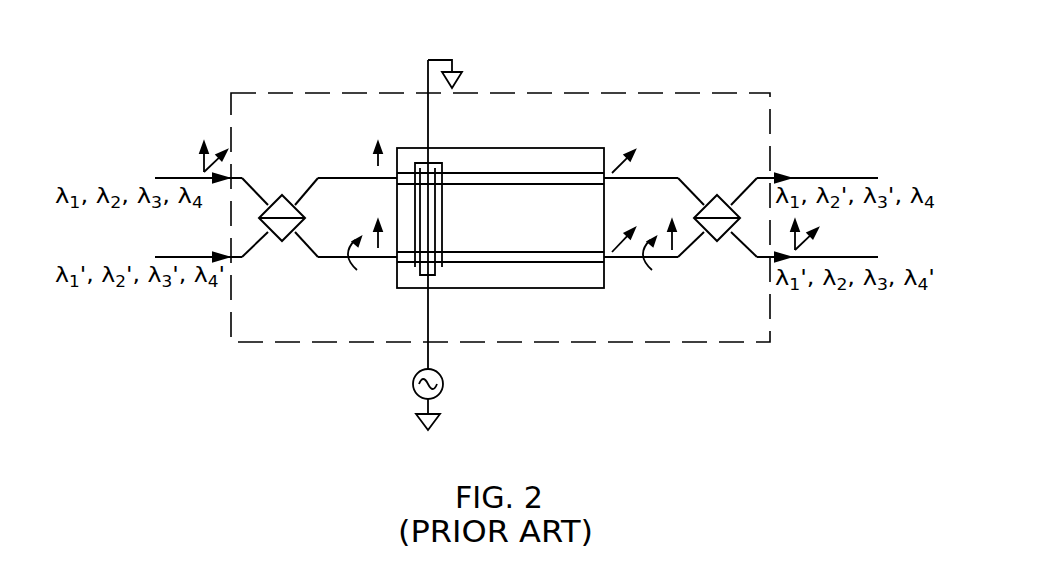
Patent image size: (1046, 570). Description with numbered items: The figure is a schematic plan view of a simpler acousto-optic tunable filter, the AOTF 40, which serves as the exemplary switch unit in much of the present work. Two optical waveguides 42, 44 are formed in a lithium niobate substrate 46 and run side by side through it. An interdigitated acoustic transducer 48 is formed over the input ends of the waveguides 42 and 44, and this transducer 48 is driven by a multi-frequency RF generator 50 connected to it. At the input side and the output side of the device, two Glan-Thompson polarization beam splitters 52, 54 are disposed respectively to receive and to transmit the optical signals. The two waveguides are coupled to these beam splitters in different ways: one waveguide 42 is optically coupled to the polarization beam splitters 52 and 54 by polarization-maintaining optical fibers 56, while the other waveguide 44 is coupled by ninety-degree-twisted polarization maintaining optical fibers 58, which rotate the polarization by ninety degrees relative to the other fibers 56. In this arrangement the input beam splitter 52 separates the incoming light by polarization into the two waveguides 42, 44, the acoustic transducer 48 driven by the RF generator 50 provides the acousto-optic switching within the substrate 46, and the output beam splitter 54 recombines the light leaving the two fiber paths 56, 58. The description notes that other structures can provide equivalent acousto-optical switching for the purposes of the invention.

The AOTF 40 is at (500, 189).
The optical waveguide 42 is at (493, 184).
The optical waveguide 44 is at (493, 252).
The lithium niobate substrate 46 is at (503, 196).
The interdigitated acoustic transducer 48 is at (413, 155).
The multi-frequency RF generator 50 is at (435, 391).
The polarization beam splitter 52 is at (280, 189).
The polarization beam splitter 54 is at (717, 190).
The polarization-maintaining optical fibers 56 is at (323, 178).
The 90°-twisted polarization maintaining optical fibers 58 is at (330, 257).